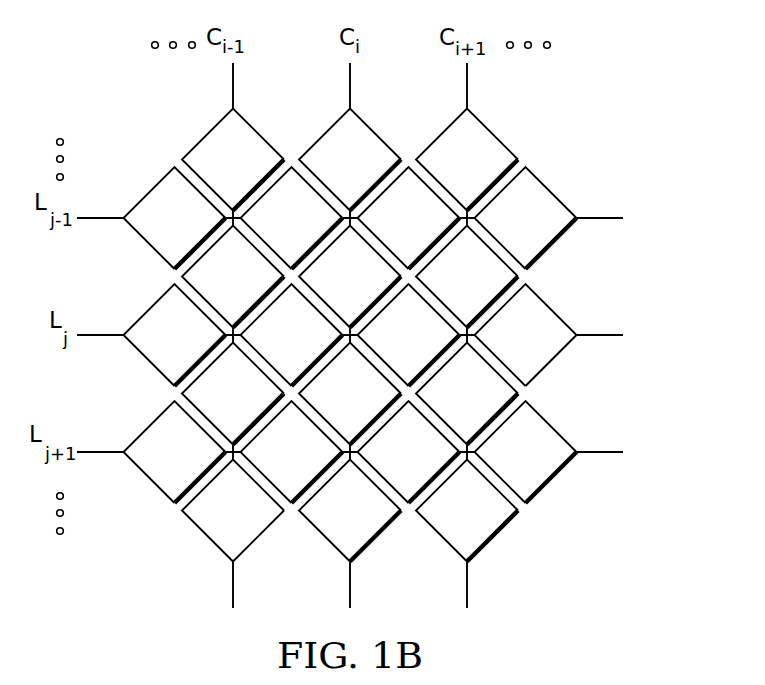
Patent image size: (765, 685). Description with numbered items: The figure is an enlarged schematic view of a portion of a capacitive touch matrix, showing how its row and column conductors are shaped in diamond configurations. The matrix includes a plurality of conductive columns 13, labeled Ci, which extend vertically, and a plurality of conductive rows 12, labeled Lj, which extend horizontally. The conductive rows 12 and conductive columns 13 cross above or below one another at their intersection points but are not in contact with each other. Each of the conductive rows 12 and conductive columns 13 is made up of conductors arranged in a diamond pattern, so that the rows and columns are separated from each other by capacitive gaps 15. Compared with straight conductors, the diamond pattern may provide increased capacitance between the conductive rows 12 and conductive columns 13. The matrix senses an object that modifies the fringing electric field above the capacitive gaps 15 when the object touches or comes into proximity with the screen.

The conductive rows 12 is at (150, 310).
The conductive columns 13 is at (377, 134).
The capacitive gaps 15 is at (496, 246).